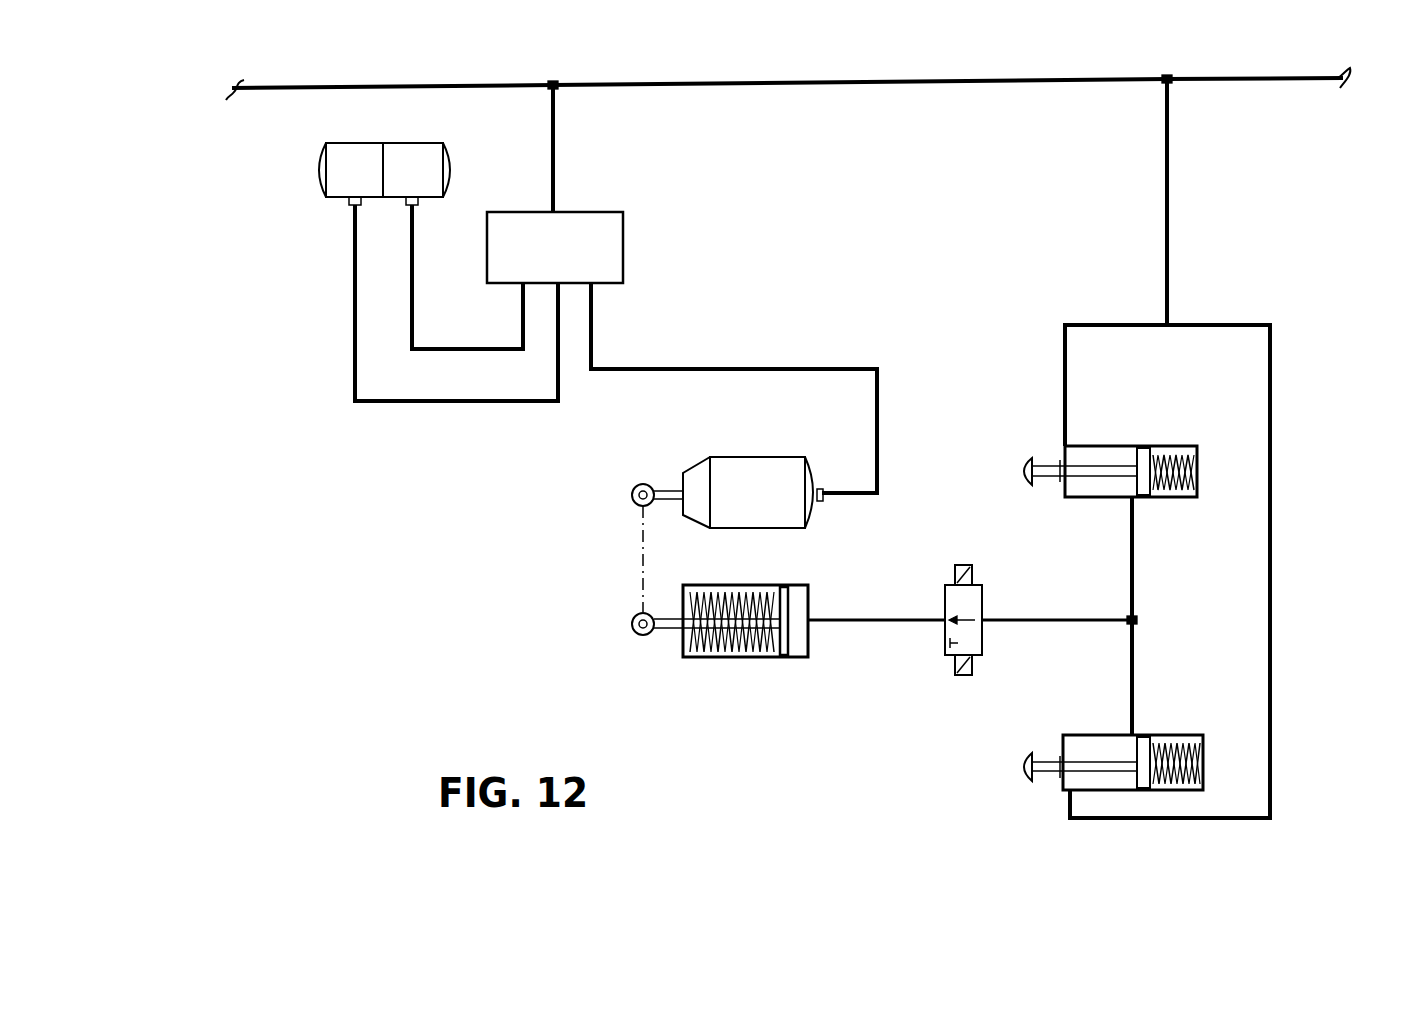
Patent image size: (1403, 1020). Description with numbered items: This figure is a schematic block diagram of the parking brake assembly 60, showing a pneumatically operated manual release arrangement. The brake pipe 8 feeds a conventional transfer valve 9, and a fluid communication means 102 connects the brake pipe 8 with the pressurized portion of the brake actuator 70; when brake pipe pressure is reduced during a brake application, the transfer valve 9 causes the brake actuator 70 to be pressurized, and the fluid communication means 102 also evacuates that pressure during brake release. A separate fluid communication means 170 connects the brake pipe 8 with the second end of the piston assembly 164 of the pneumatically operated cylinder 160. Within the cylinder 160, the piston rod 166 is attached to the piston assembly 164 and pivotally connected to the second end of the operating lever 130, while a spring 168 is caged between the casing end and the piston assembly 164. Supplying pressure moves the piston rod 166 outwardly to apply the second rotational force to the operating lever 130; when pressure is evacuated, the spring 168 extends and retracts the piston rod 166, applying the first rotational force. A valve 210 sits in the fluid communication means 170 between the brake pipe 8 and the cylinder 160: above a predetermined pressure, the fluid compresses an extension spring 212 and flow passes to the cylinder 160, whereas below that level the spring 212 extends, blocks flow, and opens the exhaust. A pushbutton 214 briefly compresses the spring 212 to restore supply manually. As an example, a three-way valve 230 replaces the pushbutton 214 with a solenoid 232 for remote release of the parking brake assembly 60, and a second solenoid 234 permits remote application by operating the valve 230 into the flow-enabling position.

The brake pipe 8 is at (792, 84).
The transfer valve 9 is at (623, 245).
The fluid communication means 102 is at (733, 367).
The brake actuator 70 is at (723, 452).
The operating lever 130 is at (640, 552).
The parking brake assembly 60 is at (684, 684).
The pneumatically operated cylinder 160 is at (742, 684).
The piston assembly 164 is at (786, 650).
The piston rod 166 is at (668, 631).
The spring 168 is at (735, 636).
The three-way valve 230 is at (1007, 619).
The solenoid 232 is at (964, 566).
The second solenoid 234 is at (968, 676).
The fluid communication means 170 is at (1272, 521).
The valve 210 is at (1088, 619).
The extension spring 212 is at (1172, 455).
The pushbutton 214 is at (1020, 472).